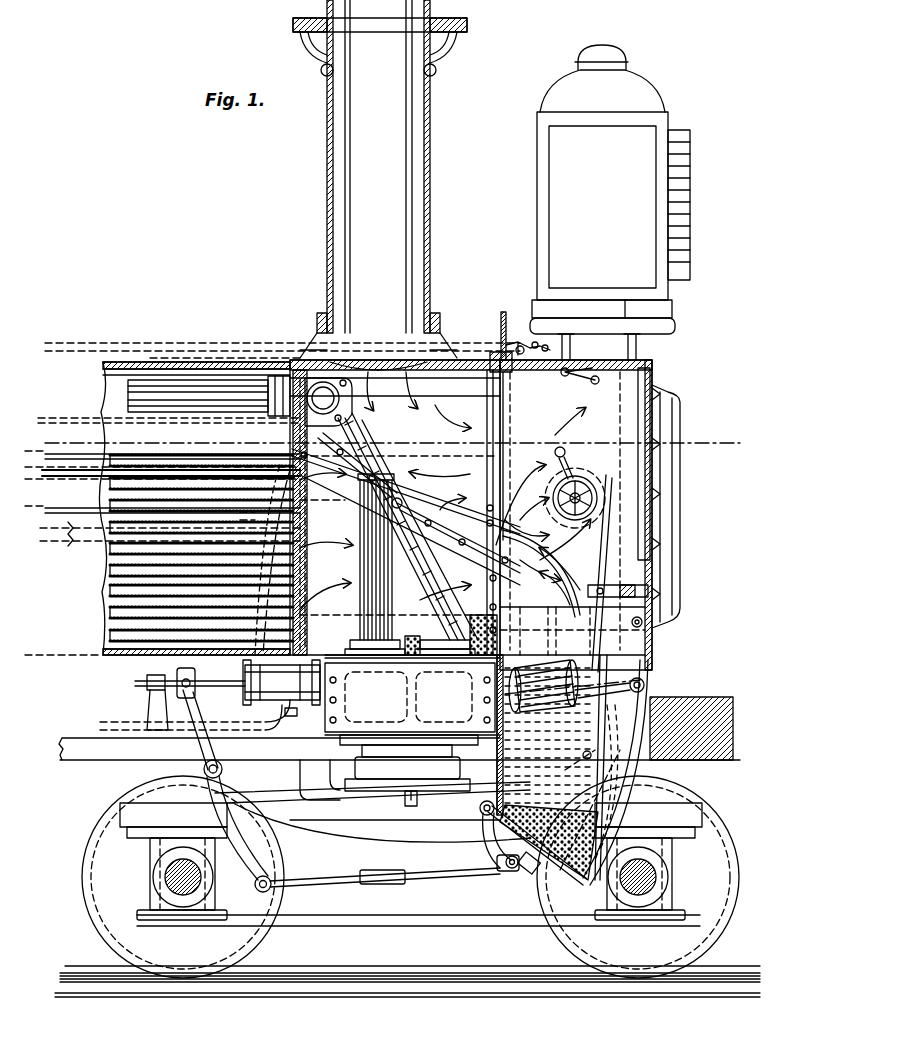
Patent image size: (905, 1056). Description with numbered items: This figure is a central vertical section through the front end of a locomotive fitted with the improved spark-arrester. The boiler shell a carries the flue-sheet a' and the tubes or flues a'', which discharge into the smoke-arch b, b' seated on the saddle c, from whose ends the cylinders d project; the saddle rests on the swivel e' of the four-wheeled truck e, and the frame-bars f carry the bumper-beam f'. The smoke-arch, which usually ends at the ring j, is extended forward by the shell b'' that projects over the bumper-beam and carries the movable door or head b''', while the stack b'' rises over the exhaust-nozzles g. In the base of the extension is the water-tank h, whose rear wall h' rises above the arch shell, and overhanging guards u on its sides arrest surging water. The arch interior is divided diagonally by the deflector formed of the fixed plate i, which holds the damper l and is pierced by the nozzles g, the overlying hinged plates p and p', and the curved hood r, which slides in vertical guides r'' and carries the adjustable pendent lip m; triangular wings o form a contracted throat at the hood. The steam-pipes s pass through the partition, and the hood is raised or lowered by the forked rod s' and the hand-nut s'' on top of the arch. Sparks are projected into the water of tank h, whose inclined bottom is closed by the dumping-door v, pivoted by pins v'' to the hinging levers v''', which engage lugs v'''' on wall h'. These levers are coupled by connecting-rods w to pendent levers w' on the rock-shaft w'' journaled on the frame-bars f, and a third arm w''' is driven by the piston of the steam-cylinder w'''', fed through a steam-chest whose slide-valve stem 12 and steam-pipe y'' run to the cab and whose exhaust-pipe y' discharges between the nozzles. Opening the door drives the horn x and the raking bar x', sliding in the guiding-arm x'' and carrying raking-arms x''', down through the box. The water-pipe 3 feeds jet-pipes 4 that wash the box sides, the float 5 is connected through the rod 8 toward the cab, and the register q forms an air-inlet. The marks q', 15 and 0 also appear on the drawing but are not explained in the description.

The boiler shell a is at (194, 503).
The flue-sheet a' is at (236, 513).
The tubes or flues a'' is at (201, 548).
The smoke-arch b is at (449, 525).
The smoke-arch b' is at (412, 510).
The stack b'' is at (380, 185).
The movable door or head of the smoke-arch b''' is at (607, 515).
The saddle c is at (410, 697).
The cylinders d is at (320, 780).
The four-wheeled truck e is at (410, 877).
The swivel e' is at (409, 770).
The frame-bars f is at (399, 747).
The bumper-beam f' is at (691, 719).
The exhaust-nozzles g is at (421, 564).
The water-tank h is at (572, 770).
The rear wall of the water-box h' is at (481, 735).
The deflector plate i is at (404, 526).
The ring j is at (480, 376).
The damper l is at (335, 480).
The pendent lip m is at (552, 562).
The triangular wings o is at (580, 870).
The flat plate p is at (406, 491).
The plate p' is at (410, 530).
The register q is at (265, 348).
The steam pipe branch q' is at (162, 460).
The hood r is at (541, 573).
The vertical guides r'' is at (534, 503).
The steam-pipes s is at (440, 440).
The forked rod s' is at (506, 426).
The hand-nut s'' is at (528, 336).
The overhanging guards u is at (555, 631).
The dumping-door v is at (537, 851).
The pivot-pins v'' is at (505, 876).
The hinging levers v''' is at (479, 840).
The hinging-lugs v'''' is at (473, 806).
The connecting-rods w is at (377, 880).
The pendent levers w' is at (237, 828).
The rock-shaft w'' is at (231, 770).
The lever-arm w''' is at (205, 728).
The steam-cylinder w'''' is at (210, 695).
The curved bar or horn x is at (391, 441).
The poking or raking bar x' is at (618, 573).
The guiding-arm x'' is at (634, 674).
The raking-arms x''' is at (573, 768).
The exhaust-pipe y' is at (192, 560).
The steam-pipe y'' is at (162, 482).
The water-pipe 3 is at (645, 622).
The jet-pipes 4 is at (640, 662).
The float 5 is at (572, 682).
The rod 8 is at (596, 480).
The valve-stem 12 is at (162, 510).
The pipe 15 is at (169, 410).
The dome rod 0 is at (628, 318).